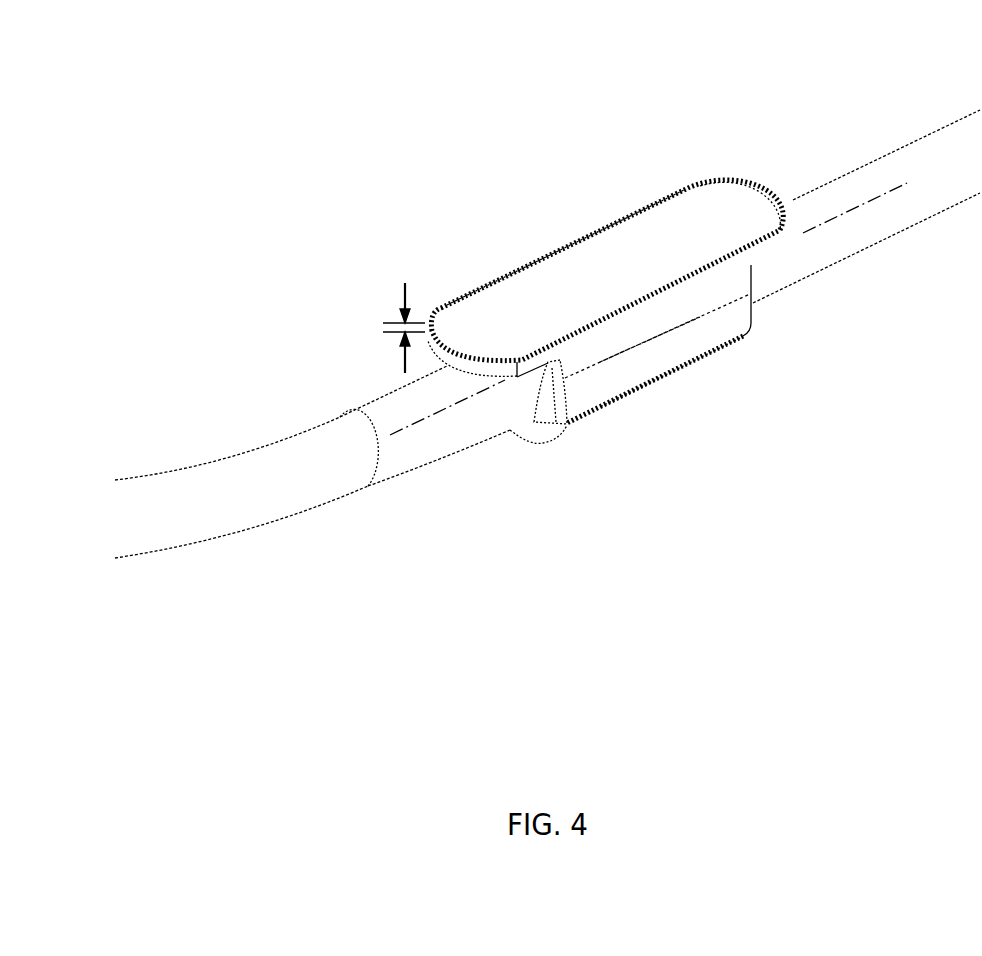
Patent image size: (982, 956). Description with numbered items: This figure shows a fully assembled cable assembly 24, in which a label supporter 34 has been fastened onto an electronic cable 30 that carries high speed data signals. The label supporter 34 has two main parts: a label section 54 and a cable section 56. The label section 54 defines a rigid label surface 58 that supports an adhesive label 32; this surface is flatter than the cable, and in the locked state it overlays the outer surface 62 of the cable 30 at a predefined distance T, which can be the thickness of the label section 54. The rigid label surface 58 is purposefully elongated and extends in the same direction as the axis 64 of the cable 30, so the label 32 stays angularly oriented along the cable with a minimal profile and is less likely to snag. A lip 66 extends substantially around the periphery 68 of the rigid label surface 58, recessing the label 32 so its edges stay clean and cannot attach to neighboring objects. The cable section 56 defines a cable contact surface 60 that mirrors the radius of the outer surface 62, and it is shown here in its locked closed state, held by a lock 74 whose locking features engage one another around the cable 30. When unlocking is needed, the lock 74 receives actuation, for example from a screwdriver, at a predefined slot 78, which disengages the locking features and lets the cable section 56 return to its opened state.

The cable assembly 24 is at (193, 84).
The electronic cable 30 is at (971, 178).
The adhesive label 32 is at (523, 282).
The label supporter 34 is at (809, 395).
The label section 54 is at (446, 244).
The cable section 56 is at (444, 512).
The rigid label surface 58 is at (575, 238).
The cable contact surface 60 is at (511, 419).
The outer surface 62 is at (940, 203).
The axis 64 is at (832, 223).
The lip 66 is at (660, 193).
The periphery 68 is at (771, 160).
The lock 74 is at (578, 428).
The predefined slot 78 is at (667, 373).
The predefined distance T is at (405, 285).